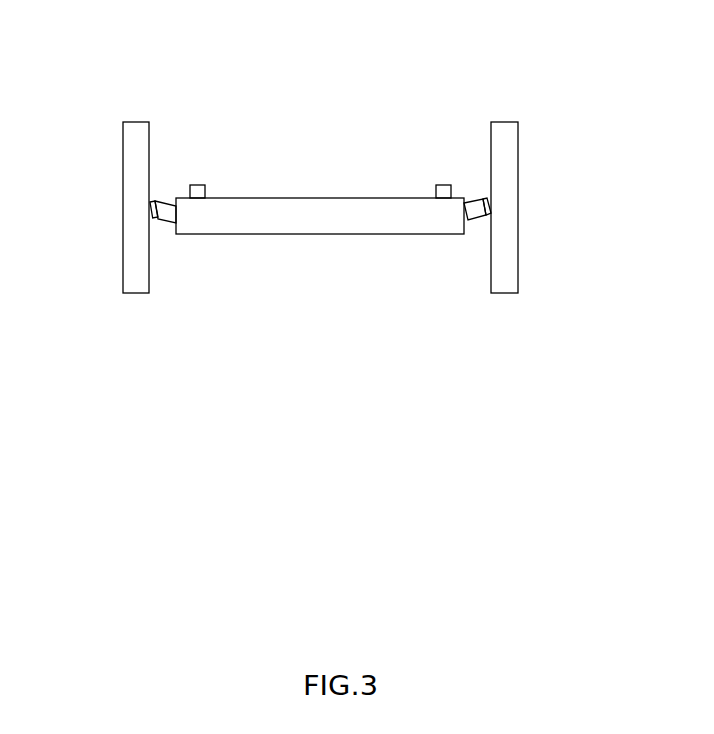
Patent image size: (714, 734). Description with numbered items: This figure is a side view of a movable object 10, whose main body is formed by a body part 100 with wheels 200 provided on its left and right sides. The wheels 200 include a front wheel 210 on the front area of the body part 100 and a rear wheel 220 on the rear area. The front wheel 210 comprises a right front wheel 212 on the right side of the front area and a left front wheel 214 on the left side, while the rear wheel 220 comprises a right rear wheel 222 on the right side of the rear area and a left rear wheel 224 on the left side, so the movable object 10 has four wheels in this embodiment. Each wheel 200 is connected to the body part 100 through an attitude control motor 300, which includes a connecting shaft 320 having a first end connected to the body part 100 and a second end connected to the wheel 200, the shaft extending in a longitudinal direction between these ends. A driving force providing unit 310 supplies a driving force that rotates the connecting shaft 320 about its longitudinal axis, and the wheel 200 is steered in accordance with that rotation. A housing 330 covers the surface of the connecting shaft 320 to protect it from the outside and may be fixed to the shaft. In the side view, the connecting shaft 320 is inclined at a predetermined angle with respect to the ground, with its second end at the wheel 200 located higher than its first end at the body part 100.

The movable object 10 is at (66, 70).
The body part 100 is at (324, 165).
The wheel 200 is at (217, 412).
The front wheel 210 is at (280, 382).
The right front wheel 212 is at (513, 183).
The left front wheel 214 is at (128, 180).
The rear wheel 220 is at (280, 457).
The right rear wheel 222 is at (443, 301).
The left rear wheel 224 is at (184, 320).
The attitude control motor 300 is at (443, 387).
The driving force providing unit 310 is at (196, 185).
The connecting shaft 320 is at (488, 199).
The housing 330 is at (468, 220).